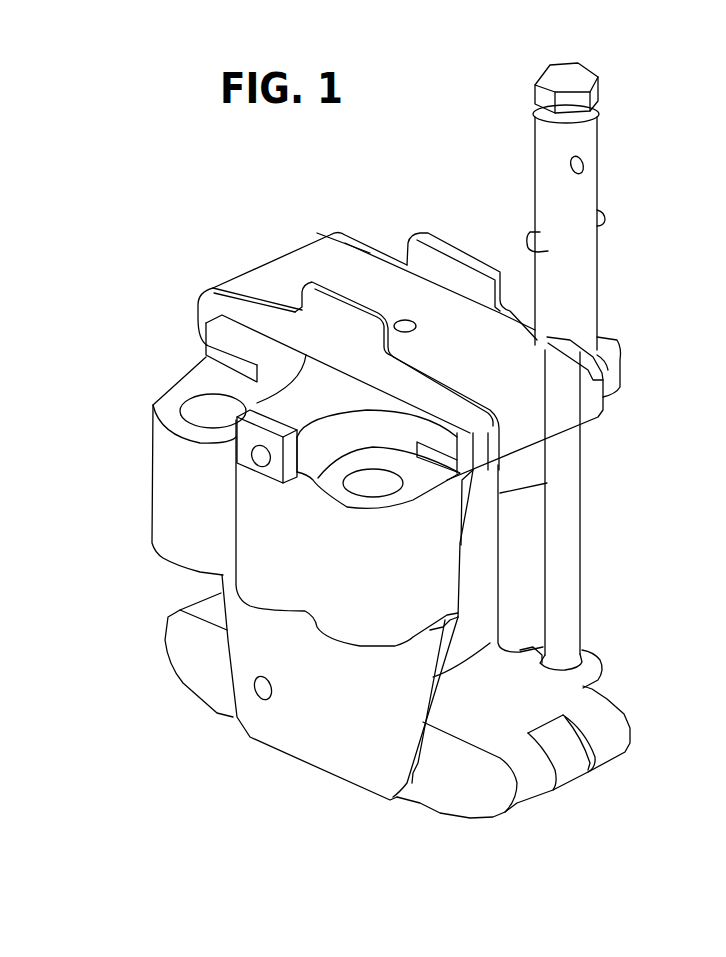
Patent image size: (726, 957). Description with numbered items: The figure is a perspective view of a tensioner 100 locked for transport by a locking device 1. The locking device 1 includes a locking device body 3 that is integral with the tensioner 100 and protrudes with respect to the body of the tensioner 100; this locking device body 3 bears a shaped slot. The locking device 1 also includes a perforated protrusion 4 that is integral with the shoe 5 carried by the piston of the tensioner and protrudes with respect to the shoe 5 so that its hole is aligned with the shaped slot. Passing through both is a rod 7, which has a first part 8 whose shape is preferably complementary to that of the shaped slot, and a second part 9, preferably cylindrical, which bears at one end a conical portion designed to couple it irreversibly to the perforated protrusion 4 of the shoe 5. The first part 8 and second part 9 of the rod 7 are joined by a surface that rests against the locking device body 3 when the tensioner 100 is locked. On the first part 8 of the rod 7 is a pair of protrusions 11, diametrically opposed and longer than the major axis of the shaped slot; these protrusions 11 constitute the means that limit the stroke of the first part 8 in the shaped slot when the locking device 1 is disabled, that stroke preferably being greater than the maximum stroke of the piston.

The tensioner 100 is at (134, 434).
The locking device 1 is at (666, 328).
The locking device body 3 is at (600, 355).
The perforated protrusion 4 is at (585, 688).
The shoe 5 is at (533, 773).
The rod 7 is at (593, 563).
The first part 8 is at (553, 182).
The second part 9 is at (553, 622).
The pair of protrusions 11 is at (540, 243).